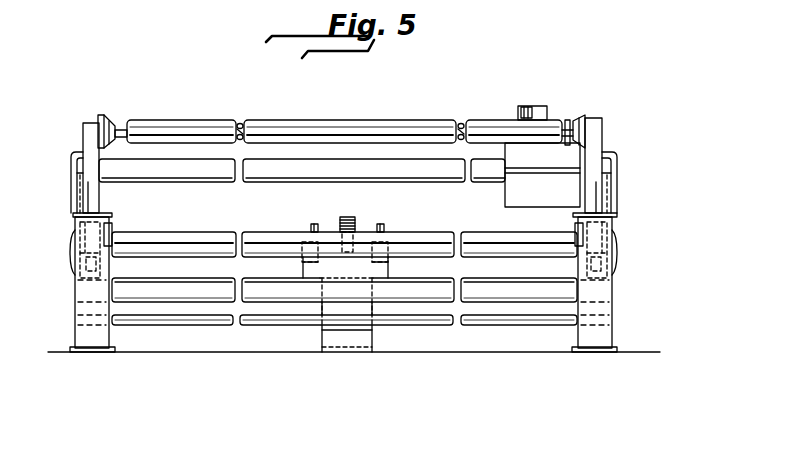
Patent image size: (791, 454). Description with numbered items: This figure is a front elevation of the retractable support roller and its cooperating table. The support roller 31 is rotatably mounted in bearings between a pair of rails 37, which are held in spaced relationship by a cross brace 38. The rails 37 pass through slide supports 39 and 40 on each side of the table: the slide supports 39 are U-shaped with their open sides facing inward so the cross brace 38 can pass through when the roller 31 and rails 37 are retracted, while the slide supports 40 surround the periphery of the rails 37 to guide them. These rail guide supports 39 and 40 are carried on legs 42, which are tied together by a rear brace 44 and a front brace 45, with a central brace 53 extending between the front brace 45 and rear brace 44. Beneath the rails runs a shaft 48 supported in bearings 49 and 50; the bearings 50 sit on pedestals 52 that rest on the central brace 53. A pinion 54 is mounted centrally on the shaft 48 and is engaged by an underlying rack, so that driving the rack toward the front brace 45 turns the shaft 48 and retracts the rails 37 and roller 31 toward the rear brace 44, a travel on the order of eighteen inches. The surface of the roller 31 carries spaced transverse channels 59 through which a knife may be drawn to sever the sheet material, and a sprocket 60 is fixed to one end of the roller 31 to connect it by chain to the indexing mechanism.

The support roller 31 is at (197, 125).
The rails 37 is at (88, 142).
The cross brace 38 is at (127, 170).
The slide supports 39 is at (72, 170).
The slide supports 40 is at (72, 254).
The legs 42 is at (82, 290).
The rear brace 44 is at (175, 318).
The front brace 45 is at (344, 230).
The shaft 48 is at (260, 232).
The bearings 49 is at (115, 227).
The bearings 50 is at (313, 226).
The pedestals 52 is at (307, 253).
The central brace 53 is at (353, 267).
The pinion 54 is at (342, 222).
The transverse channels 59 is at (143, 130).
The sprocket 60 is at (568, 123).